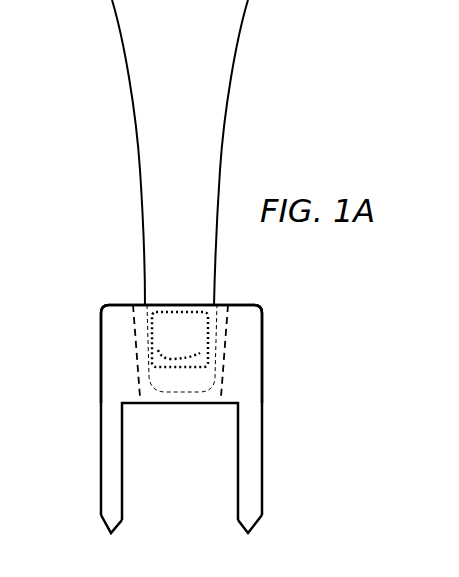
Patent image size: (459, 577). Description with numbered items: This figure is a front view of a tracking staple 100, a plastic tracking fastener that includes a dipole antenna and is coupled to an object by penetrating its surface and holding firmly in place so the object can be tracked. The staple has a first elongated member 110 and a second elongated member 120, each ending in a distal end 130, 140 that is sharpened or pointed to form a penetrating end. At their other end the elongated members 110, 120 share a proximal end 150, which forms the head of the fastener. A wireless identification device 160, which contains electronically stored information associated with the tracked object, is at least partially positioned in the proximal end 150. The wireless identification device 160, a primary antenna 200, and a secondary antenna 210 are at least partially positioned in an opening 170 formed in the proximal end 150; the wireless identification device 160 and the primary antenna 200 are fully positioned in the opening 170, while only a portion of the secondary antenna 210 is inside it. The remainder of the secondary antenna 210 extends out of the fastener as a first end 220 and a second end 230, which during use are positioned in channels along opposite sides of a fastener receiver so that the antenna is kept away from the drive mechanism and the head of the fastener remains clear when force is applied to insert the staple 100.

The tracking staple 100 is at (88, 319).
The first elongated member 110 is at (122, 450).
The second elongated member 120 is at (263, 453).
The distal end 130 is at (118, 528).
The distal end 140 is at (237, 509).
The proximal end 150 is at (244, 303).
The wireless identification device 160 is at (188, 337).
The opening 170 is at (152, 304).
The primary antenna 200 is at (152, 357).
The secondary antenna 210 is at (218, 360).
The first end 220 is at (132, 138).
The second end 230 is at (227, 125).